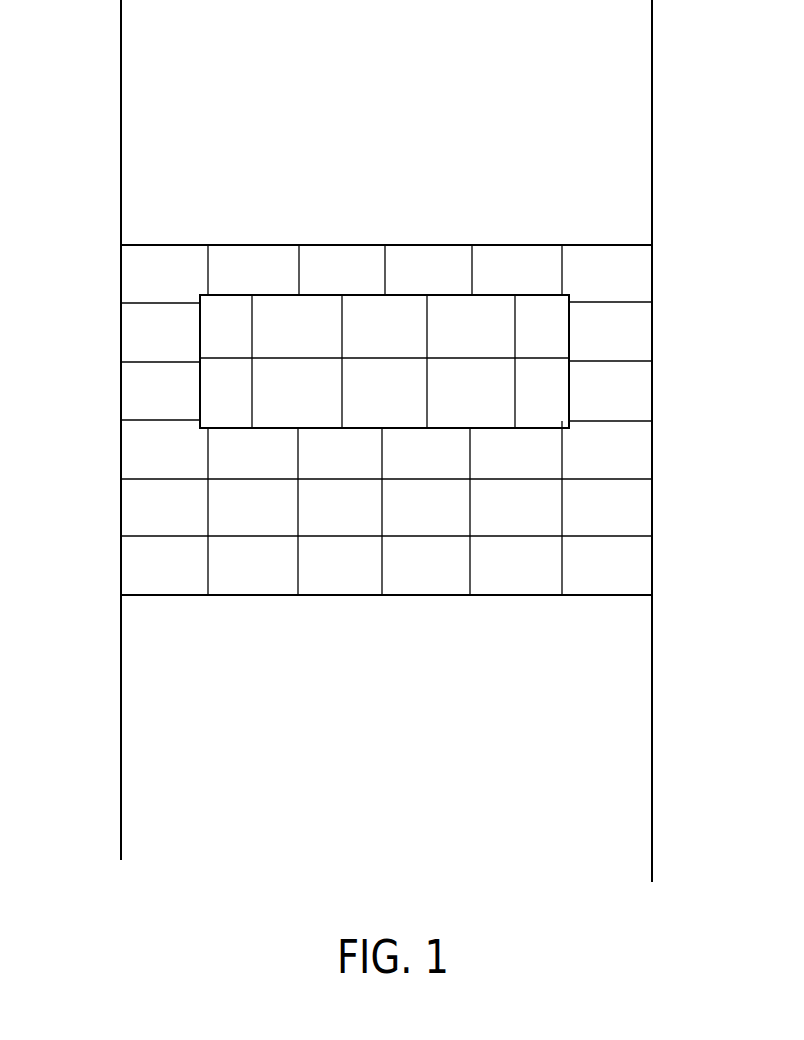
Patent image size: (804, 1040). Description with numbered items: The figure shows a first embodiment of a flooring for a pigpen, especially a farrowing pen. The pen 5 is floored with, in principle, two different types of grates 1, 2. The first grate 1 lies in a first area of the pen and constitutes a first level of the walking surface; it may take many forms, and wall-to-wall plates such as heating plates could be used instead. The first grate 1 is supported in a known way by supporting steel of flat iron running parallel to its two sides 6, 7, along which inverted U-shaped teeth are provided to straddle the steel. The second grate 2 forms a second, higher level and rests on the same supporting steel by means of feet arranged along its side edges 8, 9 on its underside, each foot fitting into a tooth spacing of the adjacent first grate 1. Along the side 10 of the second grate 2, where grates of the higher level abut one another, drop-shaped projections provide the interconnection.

The first grate 1 is at (217, 500).
The second grate 2 is at (226, 323).
The pen 5 is at (68, 116).
The side of the first grate 6 is at (206, 525).
The side of the first grate 7 is at (302, 524).
The side edge of the second grate 8 is at (493, 293).
The side edge of the second grate 9 is at (492, 362).
The side of the second grate 10 is at (425, 321).